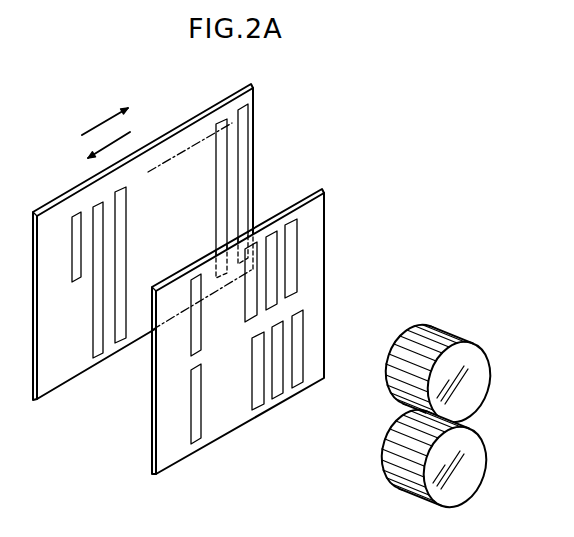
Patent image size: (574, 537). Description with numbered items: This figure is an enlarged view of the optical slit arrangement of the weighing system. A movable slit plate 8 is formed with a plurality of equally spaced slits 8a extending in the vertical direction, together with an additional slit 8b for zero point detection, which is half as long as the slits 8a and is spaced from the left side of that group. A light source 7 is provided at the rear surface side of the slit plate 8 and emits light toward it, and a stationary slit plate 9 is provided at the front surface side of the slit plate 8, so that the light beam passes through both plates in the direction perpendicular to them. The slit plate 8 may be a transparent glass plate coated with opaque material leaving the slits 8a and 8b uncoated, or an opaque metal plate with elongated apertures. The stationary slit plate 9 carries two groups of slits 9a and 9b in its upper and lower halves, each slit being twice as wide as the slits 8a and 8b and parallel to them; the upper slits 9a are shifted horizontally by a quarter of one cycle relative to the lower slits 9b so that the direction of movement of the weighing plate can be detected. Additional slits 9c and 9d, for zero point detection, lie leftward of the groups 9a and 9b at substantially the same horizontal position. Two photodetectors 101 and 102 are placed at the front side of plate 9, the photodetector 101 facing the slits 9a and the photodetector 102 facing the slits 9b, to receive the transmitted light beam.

The light source 7 is at (93, 117).
The slit plate 8 is at (205, 117).
The slits 8a is at (120, 221).
The additional slit 8b is at (70, 272).
The stationary slit plate 9 is at (157, 437).
The upper group of slits 9a is at (300, 248).
The lower group of slits 9b is at (308, 338).
The additional slit 9c is at (199, 310).
The additional slit 9d is at (195, 396).
The photodetector 101 is at (427, 325).
The photodetector 102 is at (478, 453).